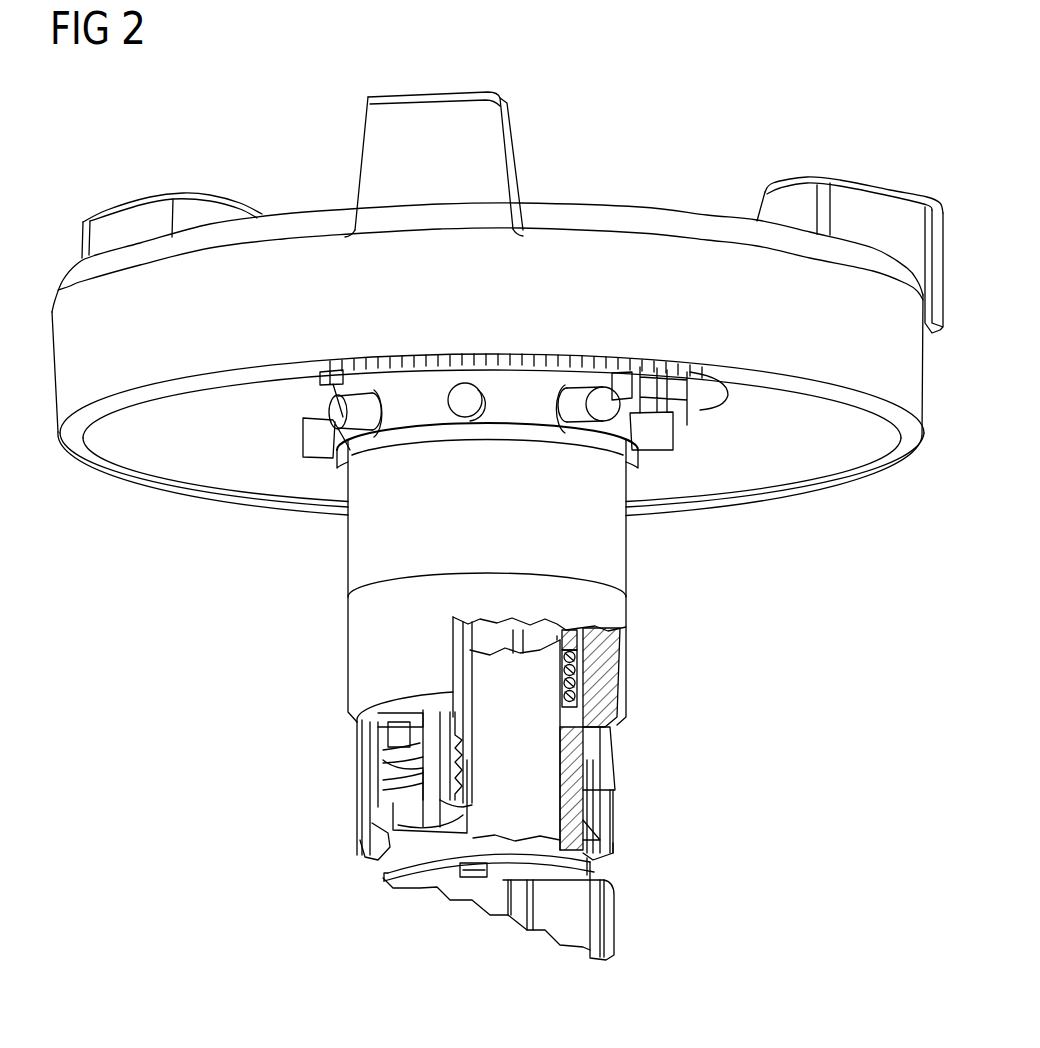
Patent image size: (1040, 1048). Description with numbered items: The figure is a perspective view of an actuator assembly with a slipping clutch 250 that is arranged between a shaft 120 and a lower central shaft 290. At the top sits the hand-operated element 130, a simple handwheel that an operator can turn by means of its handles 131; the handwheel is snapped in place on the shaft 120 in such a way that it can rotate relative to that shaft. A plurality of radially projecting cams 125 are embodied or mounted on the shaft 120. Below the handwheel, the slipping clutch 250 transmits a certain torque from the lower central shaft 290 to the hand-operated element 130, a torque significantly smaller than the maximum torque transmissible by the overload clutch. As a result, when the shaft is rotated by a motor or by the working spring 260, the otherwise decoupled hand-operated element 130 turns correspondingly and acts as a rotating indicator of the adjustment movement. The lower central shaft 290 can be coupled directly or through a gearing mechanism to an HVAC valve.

The hand-operated element 130 is at (768, 78).
The handles 131 is at (428, 112).
The radially projecting cams 125 is at (674, 434).
The shaft 120 is at (360, 545).
The working spring 260 is at (562, 670).
The slipping clutch 250 is at (593, 810).
The lower central shaft 290 is at (608, 931).